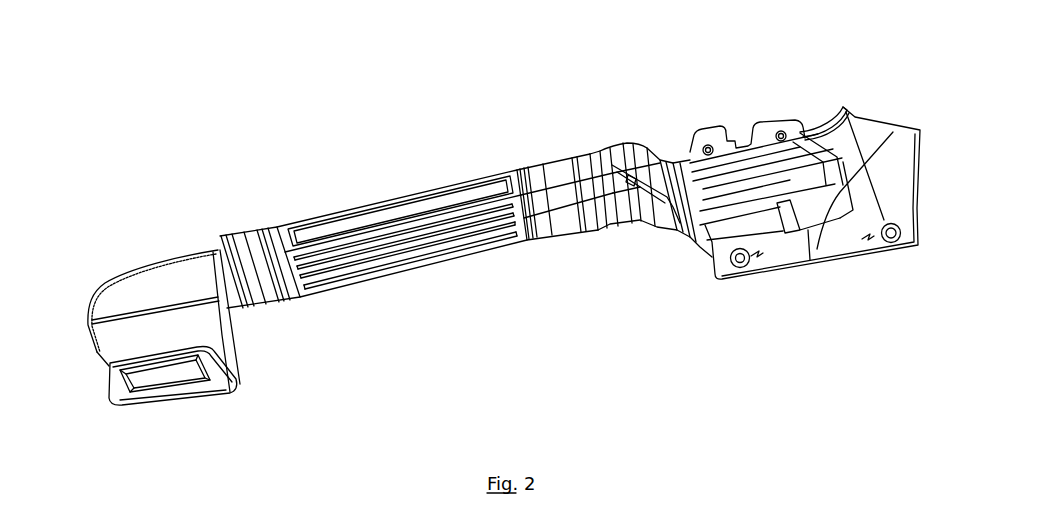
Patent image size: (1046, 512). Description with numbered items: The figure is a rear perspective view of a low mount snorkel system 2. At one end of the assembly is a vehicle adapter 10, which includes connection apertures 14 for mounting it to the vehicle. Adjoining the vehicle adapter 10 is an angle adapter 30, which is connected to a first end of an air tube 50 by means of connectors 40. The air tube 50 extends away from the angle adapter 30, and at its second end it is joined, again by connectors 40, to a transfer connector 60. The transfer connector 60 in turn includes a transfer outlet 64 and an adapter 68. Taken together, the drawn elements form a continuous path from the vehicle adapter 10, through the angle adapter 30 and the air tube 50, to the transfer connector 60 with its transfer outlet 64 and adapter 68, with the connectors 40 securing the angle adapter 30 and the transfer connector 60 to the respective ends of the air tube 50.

The snorkel system 2 is at (262, 91).
The vehicle adapter 10 is at (898, 86).
The connection apertures 14 is at (747, 266).
The angle adapter 30 is at (628, 126).
The connectors 40 is at (265, 240).
The air tube 50 is at (380, 202).
The transfer connector 60 is at (124, 250).
The transfer outlet 64 is at (172, 361).
The adapter 68 is at (212, 390).